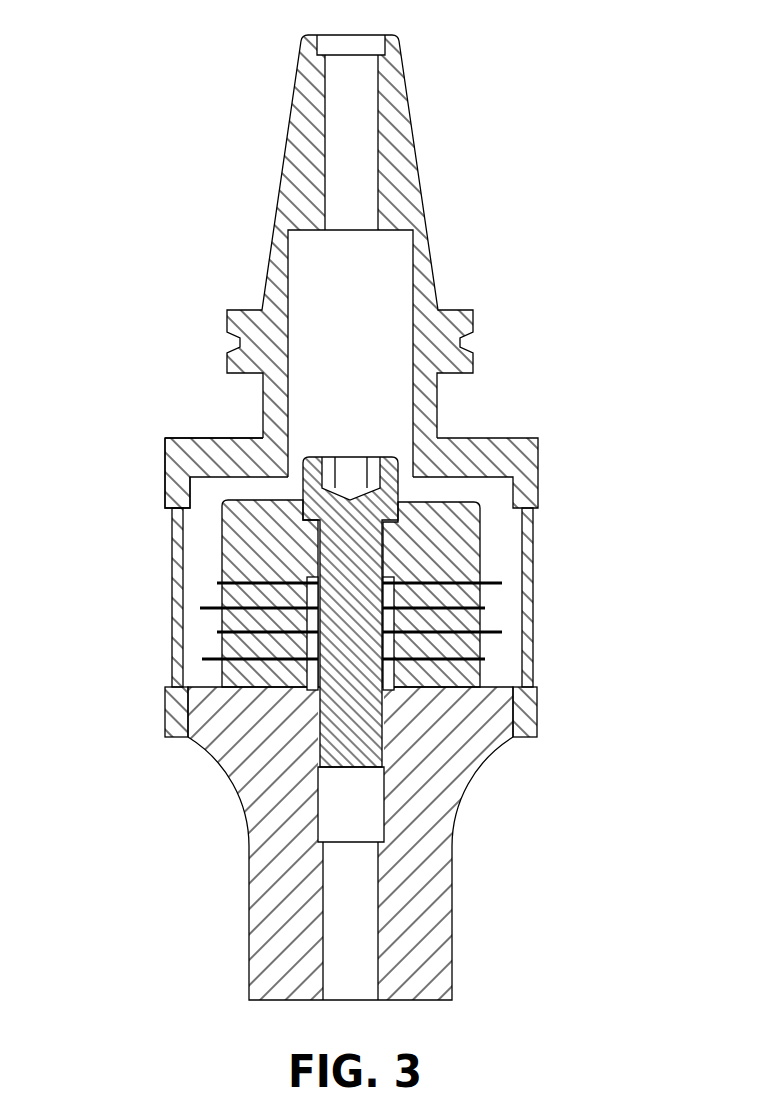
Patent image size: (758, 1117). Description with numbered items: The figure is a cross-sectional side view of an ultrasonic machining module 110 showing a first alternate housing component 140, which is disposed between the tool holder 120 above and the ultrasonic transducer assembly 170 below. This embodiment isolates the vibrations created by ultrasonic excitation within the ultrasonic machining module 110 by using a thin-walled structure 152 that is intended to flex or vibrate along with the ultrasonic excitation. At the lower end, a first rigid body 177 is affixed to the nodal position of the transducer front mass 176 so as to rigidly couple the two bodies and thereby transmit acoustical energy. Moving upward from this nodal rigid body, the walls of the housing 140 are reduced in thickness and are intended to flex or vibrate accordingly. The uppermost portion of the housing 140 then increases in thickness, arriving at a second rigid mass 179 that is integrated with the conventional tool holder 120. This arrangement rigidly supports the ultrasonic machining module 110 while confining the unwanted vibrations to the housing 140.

The ultrasonic machining module 110 is at (223, 123).
The tool holder 120 is at (437, 283).
The housing component 140 is at (540, 480).
The thin-walled structure 152 is at (167, 595).
The ultrasonic transducer assembly 170 is at (406, 843).
The transducer front mass 176 is at (473, 777).
The first rigid body 177 is at (165, 712).
The second rigid mass 179 is at (165, 457).